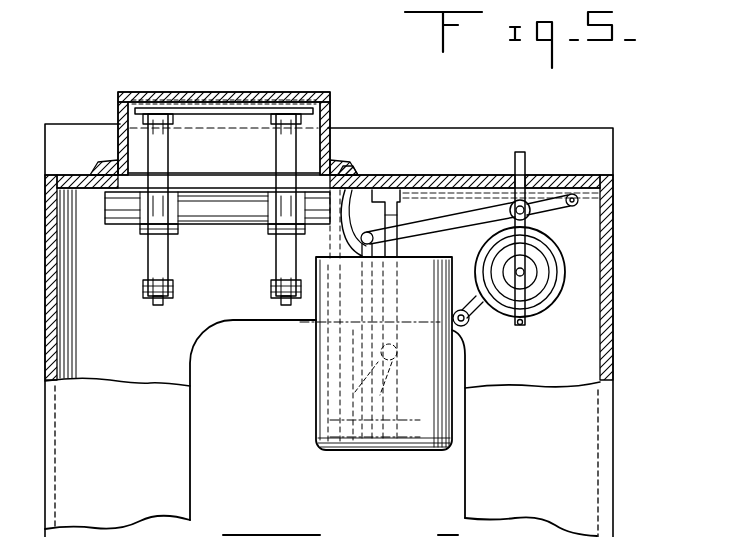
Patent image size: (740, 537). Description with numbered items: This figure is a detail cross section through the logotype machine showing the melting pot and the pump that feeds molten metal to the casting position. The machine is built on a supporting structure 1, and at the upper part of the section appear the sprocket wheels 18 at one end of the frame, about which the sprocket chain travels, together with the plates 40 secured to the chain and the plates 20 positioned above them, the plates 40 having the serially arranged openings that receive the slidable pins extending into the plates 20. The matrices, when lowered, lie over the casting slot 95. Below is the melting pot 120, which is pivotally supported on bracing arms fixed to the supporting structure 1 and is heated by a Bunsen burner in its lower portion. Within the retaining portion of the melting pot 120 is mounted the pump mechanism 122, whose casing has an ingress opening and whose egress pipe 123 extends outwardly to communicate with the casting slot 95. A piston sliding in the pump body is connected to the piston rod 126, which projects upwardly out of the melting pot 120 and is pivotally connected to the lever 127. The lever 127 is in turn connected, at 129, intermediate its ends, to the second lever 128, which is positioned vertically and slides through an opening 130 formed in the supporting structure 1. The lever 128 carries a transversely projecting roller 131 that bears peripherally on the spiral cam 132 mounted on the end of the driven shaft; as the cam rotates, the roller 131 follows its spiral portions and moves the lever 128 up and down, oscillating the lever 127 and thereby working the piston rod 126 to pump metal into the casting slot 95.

The supporting structure 1 is at (615, 182).
The sprocket wheels 18 is at (147, 273).
The plates 20 is at (197, 107).
The plates 40 is at (267, 115).
The casting slot 95 is at (347, 166).
The melting pot 120 is at (320, 408).
The pump mechanism 122 is at (403, 202).
The egress pipe 123 is at (320, 348).
The piston rod 126 is at (356, 190).
The lever 127 is at (468, 217).
The second lever 128 is at (527, 167).
The connection point 129 is at (570, 197).
The opening 130 is at (537, 200).
The roller 131 is at (528, 270).
The spiral cam 132 is at (555, 298).